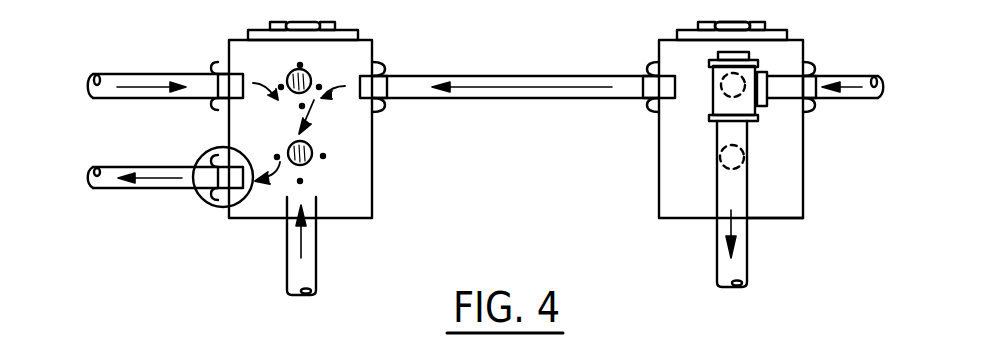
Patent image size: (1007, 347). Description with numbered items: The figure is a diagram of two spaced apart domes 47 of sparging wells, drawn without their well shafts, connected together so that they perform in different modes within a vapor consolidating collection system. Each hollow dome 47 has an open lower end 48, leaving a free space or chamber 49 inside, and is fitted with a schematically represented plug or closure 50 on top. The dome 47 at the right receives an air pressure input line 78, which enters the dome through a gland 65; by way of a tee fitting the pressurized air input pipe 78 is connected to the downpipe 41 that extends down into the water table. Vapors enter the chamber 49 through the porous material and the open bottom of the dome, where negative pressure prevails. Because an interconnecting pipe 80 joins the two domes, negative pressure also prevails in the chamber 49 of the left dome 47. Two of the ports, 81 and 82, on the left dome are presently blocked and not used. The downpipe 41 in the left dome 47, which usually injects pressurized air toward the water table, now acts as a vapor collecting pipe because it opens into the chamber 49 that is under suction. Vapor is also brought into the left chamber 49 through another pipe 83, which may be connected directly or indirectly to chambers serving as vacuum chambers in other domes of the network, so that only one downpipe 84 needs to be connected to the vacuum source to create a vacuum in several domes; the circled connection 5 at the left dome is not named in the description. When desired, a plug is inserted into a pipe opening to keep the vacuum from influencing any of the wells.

The valve 5 is at (203, 202).
The downpipe 41 is at (308, 270).
The dome 47 is at (376, 130).
The open lower end 48 is at (765, 222).
The chamber 49 is at (360, 194).
The plug or closure 50 is at (733, 22).
The gland 65 is at (817, 70).
The air pressure input line 78 is at (822, 100).
The interconnecting pipe 80 is at (572, 72).
The port 81 is at (312, 77).
The port 82 is at (307, 160).
The pipe 83 is at (190, 72).
The downpipe 84 is at (162, 166).